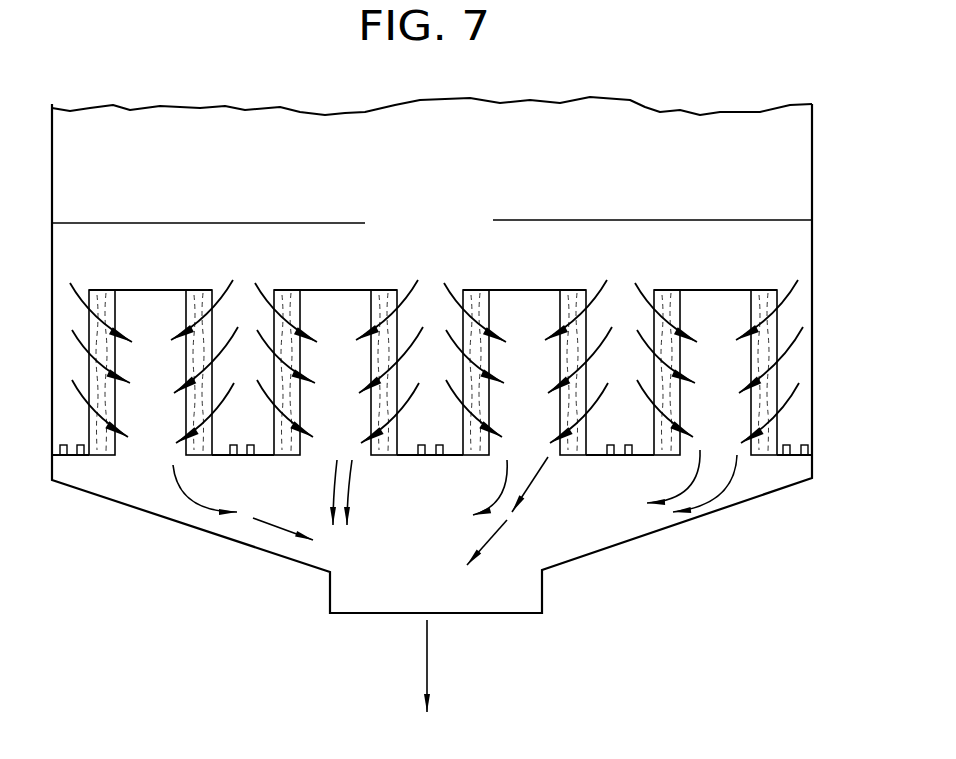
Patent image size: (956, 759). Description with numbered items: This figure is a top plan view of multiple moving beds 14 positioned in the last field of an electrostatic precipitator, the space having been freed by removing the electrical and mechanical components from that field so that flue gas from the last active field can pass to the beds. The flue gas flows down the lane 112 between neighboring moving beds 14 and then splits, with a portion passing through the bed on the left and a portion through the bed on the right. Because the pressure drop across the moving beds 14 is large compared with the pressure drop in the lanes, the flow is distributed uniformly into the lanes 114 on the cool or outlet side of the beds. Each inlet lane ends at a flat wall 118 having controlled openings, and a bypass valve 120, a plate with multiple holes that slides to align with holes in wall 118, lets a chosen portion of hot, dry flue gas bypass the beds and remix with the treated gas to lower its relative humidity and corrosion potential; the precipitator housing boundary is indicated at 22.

The moving beds 14 is at (353, 290).
The electrostatic precipitator housing (last active field) 22 is at (790, 203).
The lane 112 is at (437, 377).
The lanes 114 is at (352, 432).
The flat wall 118 is at (411, 457).
The bypass valve 120 is at (632, 428).